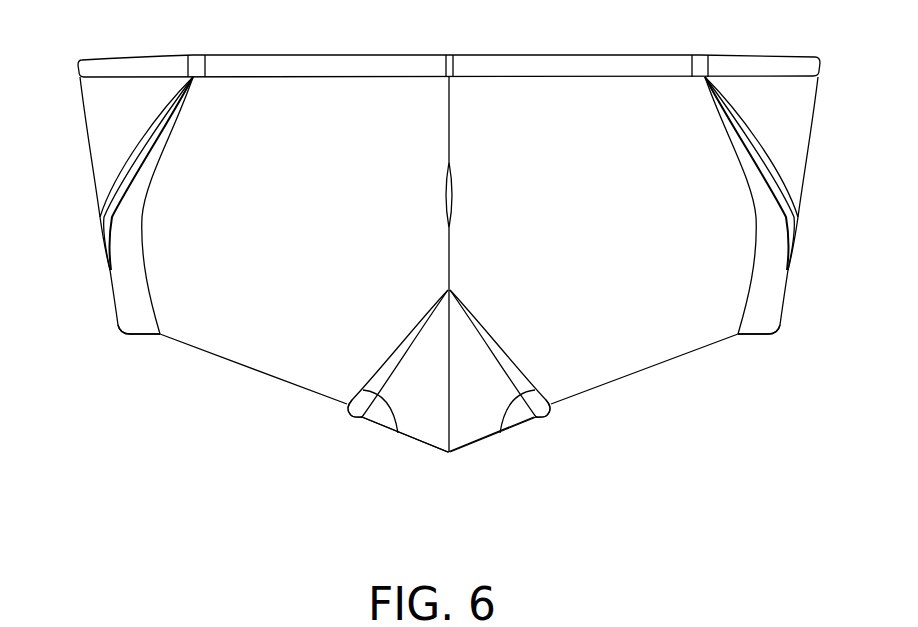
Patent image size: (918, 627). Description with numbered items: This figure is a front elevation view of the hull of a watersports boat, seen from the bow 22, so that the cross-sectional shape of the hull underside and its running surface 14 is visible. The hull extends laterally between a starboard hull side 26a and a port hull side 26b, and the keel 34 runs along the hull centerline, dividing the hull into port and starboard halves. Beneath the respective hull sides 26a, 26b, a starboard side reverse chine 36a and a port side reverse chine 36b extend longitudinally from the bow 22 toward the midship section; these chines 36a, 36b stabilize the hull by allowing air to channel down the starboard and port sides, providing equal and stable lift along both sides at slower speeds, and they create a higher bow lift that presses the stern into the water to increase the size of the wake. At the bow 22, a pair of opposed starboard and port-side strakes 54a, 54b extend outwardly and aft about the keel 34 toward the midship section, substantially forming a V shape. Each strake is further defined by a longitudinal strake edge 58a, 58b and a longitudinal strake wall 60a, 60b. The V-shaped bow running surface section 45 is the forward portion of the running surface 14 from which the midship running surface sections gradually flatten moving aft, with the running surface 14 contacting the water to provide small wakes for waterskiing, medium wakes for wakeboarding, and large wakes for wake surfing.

The running surface 14 is at (336, 516).
The bow 22 is at (513, 100).
The V-shaped bow running surface section 45 is at (342, 250).
The starboard hull side 26a is at (95, 150).
The port hull side 26b is at (803, 132).
The starboard side reverse chine 36a is at (148, 332).
The port side reverse chine 36b is at (750, 332).
The starboard-side strake 54a is at (358, 429).
The port-side strake 54b is at (540, 429).
The longitudinal strake edge 58a is at (332, 410).
The longitudinal strake edge 58b is at (566, 410).
The longitudinal strake wall 60a is at (398, 434).
The longitudinal strake wall 60b is at (500, 434).
The keel 34 is at (448, 454).